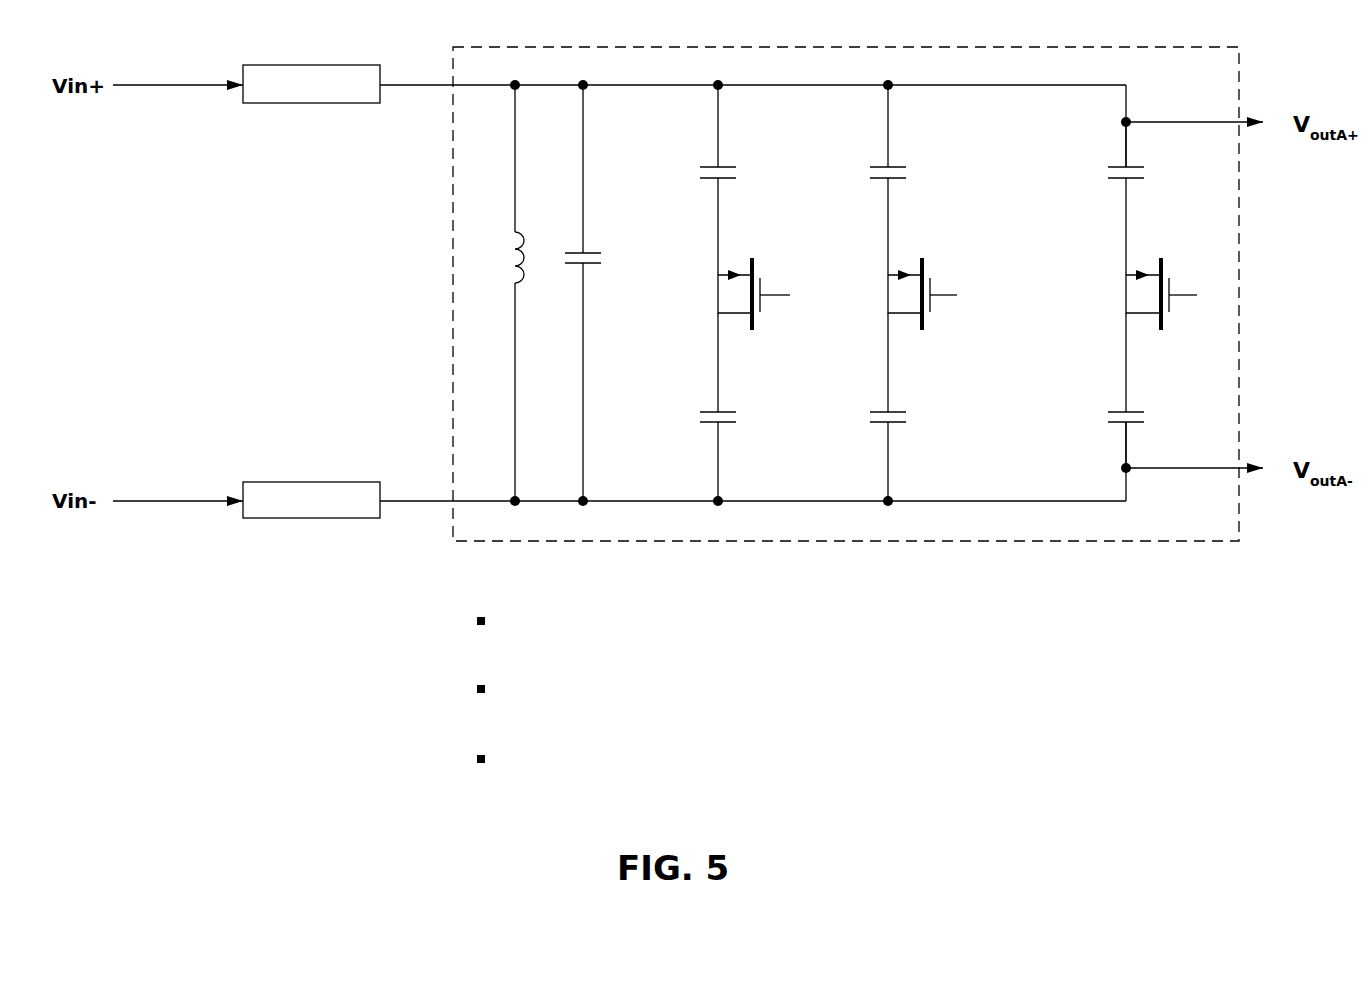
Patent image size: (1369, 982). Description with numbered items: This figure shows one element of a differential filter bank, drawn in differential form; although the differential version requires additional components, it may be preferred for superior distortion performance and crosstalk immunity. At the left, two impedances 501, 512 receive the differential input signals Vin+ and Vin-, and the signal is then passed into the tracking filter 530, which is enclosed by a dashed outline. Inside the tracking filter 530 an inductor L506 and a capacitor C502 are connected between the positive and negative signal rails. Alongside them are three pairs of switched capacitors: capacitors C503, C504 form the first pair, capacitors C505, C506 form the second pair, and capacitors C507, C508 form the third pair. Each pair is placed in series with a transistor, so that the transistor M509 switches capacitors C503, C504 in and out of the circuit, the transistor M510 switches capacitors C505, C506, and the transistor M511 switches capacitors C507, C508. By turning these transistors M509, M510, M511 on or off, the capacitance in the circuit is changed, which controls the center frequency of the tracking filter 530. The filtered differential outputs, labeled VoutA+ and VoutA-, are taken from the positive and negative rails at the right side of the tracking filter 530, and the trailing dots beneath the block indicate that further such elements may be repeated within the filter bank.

The impedance 501 is at (362, 66).
The impedance 512 is at (357, 483).
The tracking filter 530 is at (677, 541).
The inductor L506 is at (489, 293).
The capacitor C502 is at (613, 293).
The capacitor C503 is at (747, 180).
The capacitor C504 is at (747, 407).
The capacitor C505 is at (918, 180).
The capacitor C506 is at (918, 407).
The capacitor C507 is at (1156, 198).
The capacitor C508 is at (1156, 390).
The transistor M509 is at (750, 294).
The transistor M510 is at (922, 294).
The transistor M511 is at (1149, 294).